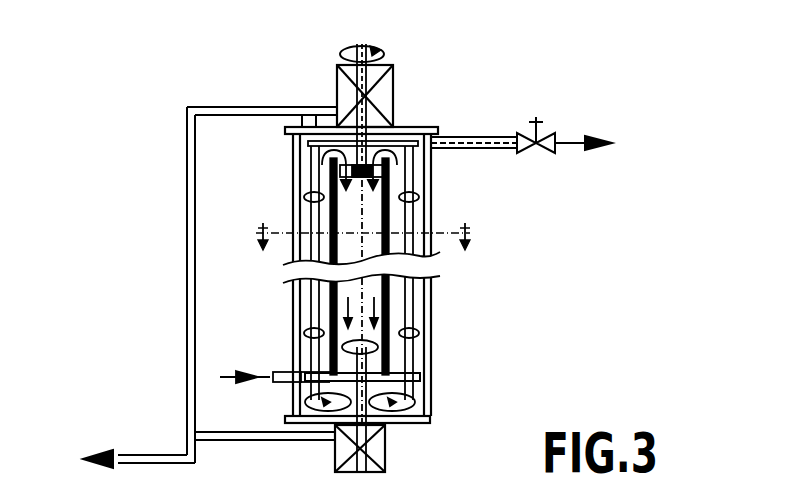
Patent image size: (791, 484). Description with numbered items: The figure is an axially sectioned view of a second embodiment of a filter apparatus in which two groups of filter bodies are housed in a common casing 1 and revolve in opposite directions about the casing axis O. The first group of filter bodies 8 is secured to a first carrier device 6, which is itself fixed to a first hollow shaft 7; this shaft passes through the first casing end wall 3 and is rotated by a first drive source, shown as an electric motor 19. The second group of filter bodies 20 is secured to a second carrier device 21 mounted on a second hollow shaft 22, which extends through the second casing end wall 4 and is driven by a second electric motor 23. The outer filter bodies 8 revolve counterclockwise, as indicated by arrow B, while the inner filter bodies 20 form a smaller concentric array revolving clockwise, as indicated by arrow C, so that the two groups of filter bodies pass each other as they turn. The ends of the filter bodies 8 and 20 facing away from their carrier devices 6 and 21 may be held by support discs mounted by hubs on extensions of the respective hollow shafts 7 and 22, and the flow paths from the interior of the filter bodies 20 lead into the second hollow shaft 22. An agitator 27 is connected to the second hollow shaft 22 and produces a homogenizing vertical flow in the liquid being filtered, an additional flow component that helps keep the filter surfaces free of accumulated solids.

The casing 1 is at (272, 190).
The first casing end wall 3 is at (318, 122).
The electric motor 19 is at (388, 92).
The arrow B is at (380, 52).
The casing axis O is at (368, 42).
The first hollow shaft 7 is at (372, 118).
The first carrier device 6 is at (440, 130).
The filter bodies 8 is at (425, 210).
The filter bodies 20 is at (392, 305).
The arrow C is at (428, 356).
The second carrier device 21 is at (418, 388).
The second hollow shaft 22 is at (400, 430).
The agitator 27 is at (300, 408).
The second casing end wall 4 is at (385, 440).
The second electric motor 23 is at (340, 450).